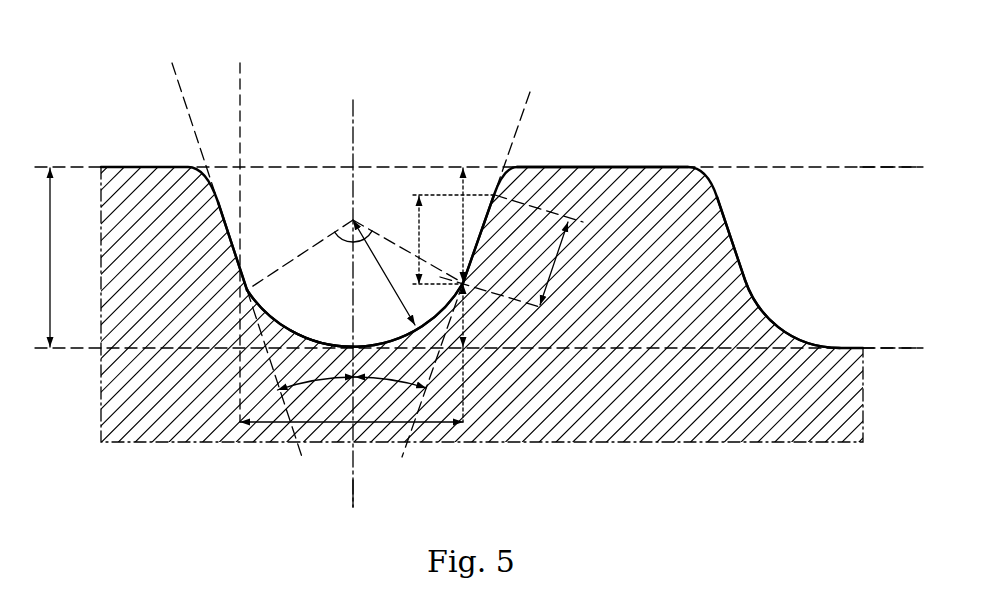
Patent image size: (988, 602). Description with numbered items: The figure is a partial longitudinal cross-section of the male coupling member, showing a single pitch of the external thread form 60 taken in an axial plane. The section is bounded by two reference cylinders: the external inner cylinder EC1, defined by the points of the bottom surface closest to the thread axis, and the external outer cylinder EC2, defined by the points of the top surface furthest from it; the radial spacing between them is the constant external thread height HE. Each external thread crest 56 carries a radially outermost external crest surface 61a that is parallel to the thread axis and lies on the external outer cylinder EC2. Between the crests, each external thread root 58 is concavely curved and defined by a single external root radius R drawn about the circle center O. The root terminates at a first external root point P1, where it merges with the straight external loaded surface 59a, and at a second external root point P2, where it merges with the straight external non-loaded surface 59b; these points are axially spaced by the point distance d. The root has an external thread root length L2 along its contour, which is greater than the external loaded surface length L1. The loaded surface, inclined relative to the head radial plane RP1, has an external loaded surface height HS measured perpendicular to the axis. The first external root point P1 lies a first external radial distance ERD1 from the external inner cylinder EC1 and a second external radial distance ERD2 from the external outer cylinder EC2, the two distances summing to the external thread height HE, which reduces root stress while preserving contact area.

The external thread crest 56 is at (686, 165).
The external thread root 58 is at (252, 321).
The external loaded surface 59a is at (488, 193).
The external non-loaded surface 59b is at (218, 200).
The external thread form 60 is at (771, 267).
The radially outermost external crest surface 61a is at (632, 167).
The external loaded surface height HS is at (418, 229).
The external thread height HE is at (50, 263).
The external inner cylinder EC1 is at (893, 347).
The external outer cylinder EC2 is at (880, 168).
The first external radial distance ERD1 is at (465, 330).
The second external radial distance ERD2 is at (462, 207).
The circle center O is at (356, 217).
The external root radius R is at (384, 273).
The external loaded surface length L1 is at (550, 273).
The external thread root length L2 is at (320, 342).
The first external root point P1 is at (537, 210).
The second external root point P2 is at (231, 241).
The point distance d is at (441, 423).
The head radial plane RP1 is at (351, 487).